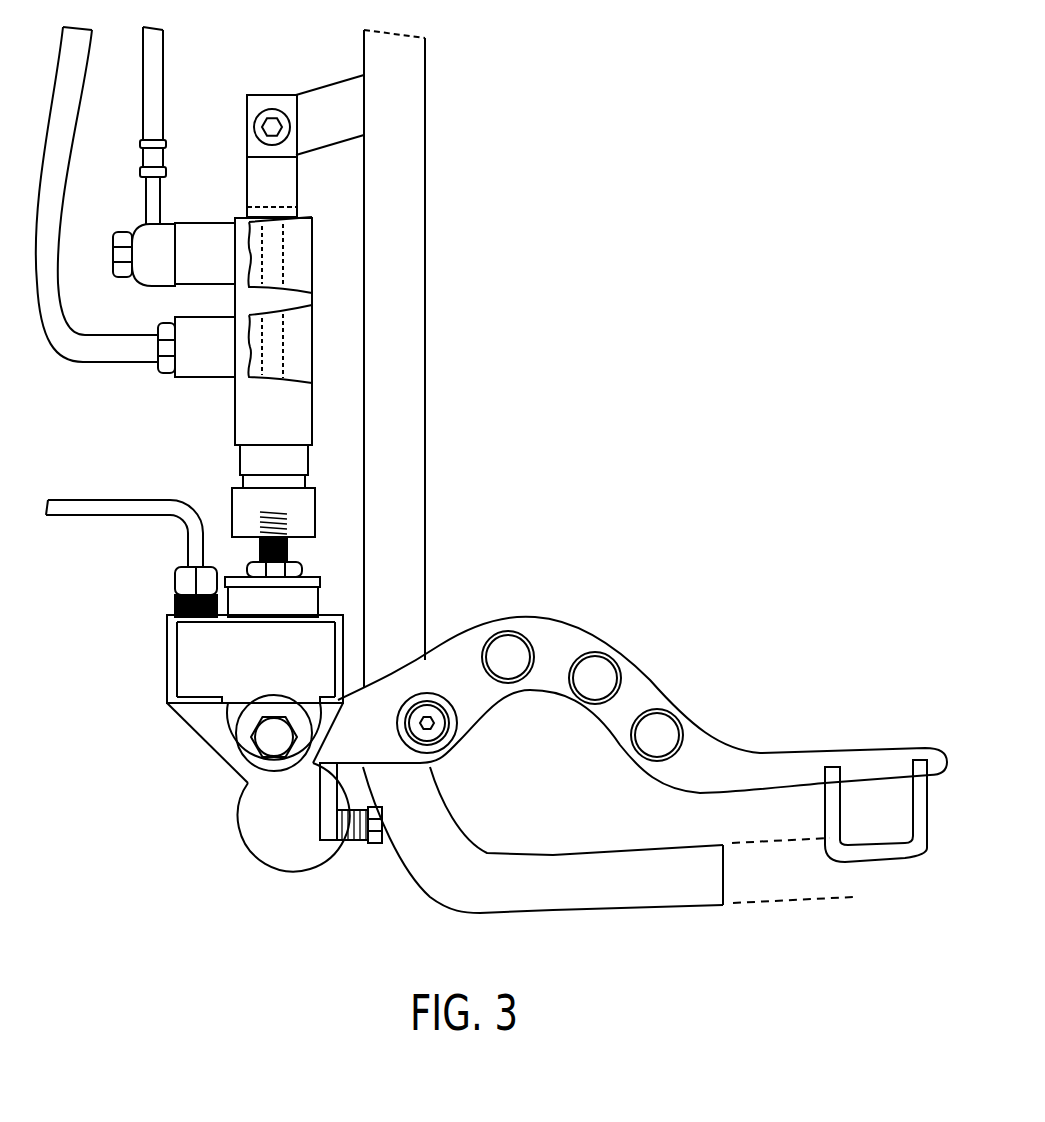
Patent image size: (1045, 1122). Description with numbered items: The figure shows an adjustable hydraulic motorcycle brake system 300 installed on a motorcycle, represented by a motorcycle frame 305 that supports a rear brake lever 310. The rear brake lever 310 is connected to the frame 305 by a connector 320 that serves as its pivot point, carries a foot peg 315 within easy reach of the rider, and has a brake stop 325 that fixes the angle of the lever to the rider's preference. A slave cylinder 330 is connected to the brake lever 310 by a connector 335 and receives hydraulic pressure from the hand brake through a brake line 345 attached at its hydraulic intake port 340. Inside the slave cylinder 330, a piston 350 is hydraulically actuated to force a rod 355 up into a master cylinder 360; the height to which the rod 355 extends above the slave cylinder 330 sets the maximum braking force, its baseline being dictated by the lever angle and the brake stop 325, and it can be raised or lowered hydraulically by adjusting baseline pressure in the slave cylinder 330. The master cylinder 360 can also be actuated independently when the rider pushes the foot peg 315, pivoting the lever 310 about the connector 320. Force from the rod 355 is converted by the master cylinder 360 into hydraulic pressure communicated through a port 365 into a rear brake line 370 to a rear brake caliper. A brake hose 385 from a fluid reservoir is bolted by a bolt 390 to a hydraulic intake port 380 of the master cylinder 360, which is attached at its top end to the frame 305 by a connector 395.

The adjustable hydraulic motorcycle brake system 300 is at (718, 178).
The motorcycle frame 305 is at (425, 313).
The rear brake lever 310 is at (537, 615).
The foot peg 315 is at (912, 857).
The connector 320 is at (455, 725).
The brake stop 325 is at (350, 840).
The slave cylinder 330 is at (193, 733).
The connector 335 is at (273, 738).
The hydraulic intake port 340 is at (173, 583).
The brake line 345 is at (140, 500).
The piston 350 is at (318, 602).
The rod 355 is at (293, 550).
The master cylinder 360 is at (237, 430).
The port 365 is at (195, 378).
The rear brake line 370 is at (102, 342).
The hydraulic intake port 380 is at (195, 232).
The brake hose 385 is at (163, 77).
The bolt 390 is at (127, 232).
The connector 395 is at (267, 108).